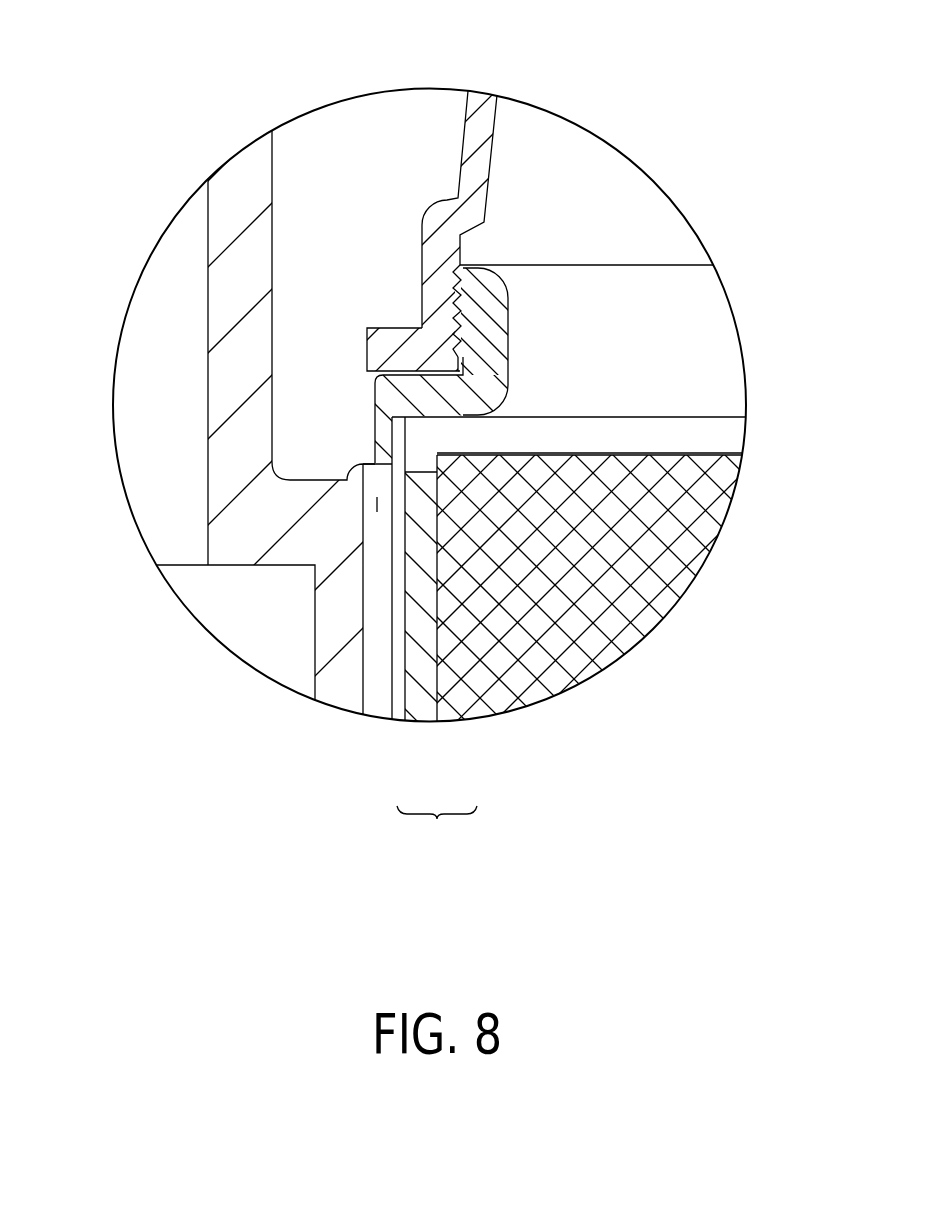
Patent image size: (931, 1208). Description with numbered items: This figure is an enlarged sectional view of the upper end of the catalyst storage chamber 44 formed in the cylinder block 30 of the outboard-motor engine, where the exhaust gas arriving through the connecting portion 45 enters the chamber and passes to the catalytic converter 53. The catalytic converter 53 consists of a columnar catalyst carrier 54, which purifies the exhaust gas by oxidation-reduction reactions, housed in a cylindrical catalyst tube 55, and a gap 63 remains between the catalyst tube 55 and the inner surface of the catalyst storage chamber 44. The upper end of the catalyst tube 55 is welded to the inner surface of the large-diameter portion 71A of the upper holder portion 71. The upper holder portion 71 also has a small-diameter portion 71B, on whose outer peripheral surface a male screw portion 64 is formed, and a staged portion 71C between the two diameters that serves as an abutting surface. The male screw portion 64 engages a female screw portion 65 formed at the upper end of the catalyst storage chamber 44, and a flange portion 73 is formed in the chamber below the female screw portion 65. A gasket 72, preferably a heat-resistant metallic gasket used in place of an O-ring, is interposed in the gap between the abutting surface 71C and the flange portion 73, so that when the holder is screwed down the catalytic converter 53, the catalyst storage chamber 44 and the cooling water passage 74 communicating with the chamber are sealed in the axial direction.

The cylinder block 30 is at (207, 432).
The catalyst storage chamber 44 is at (422, 222).
The connecting portion 45 is at (593, 197).
The catalytic converter 53 is at (437, 828).
The catalyst carrier 54 is at (500, 673).
The catalyst tube 55 is at (400, 588).
The gap 63 is at (377, 505).
The male screw portion 64 is at (455, 280).
The female screw portion 65 is at (462, 335).
The upper holder portion 71 is at (588, 282).
The large-diameter portion 71A is at (400, 442).
The small-diameter portion 71B is at (492, 313).
The staged portion 71C is at (418, 372).
The gasket 72 is at (383, 384).
The flange portion 73 is at (392, 321).
The cooling water passage 74 is at (355, 147).